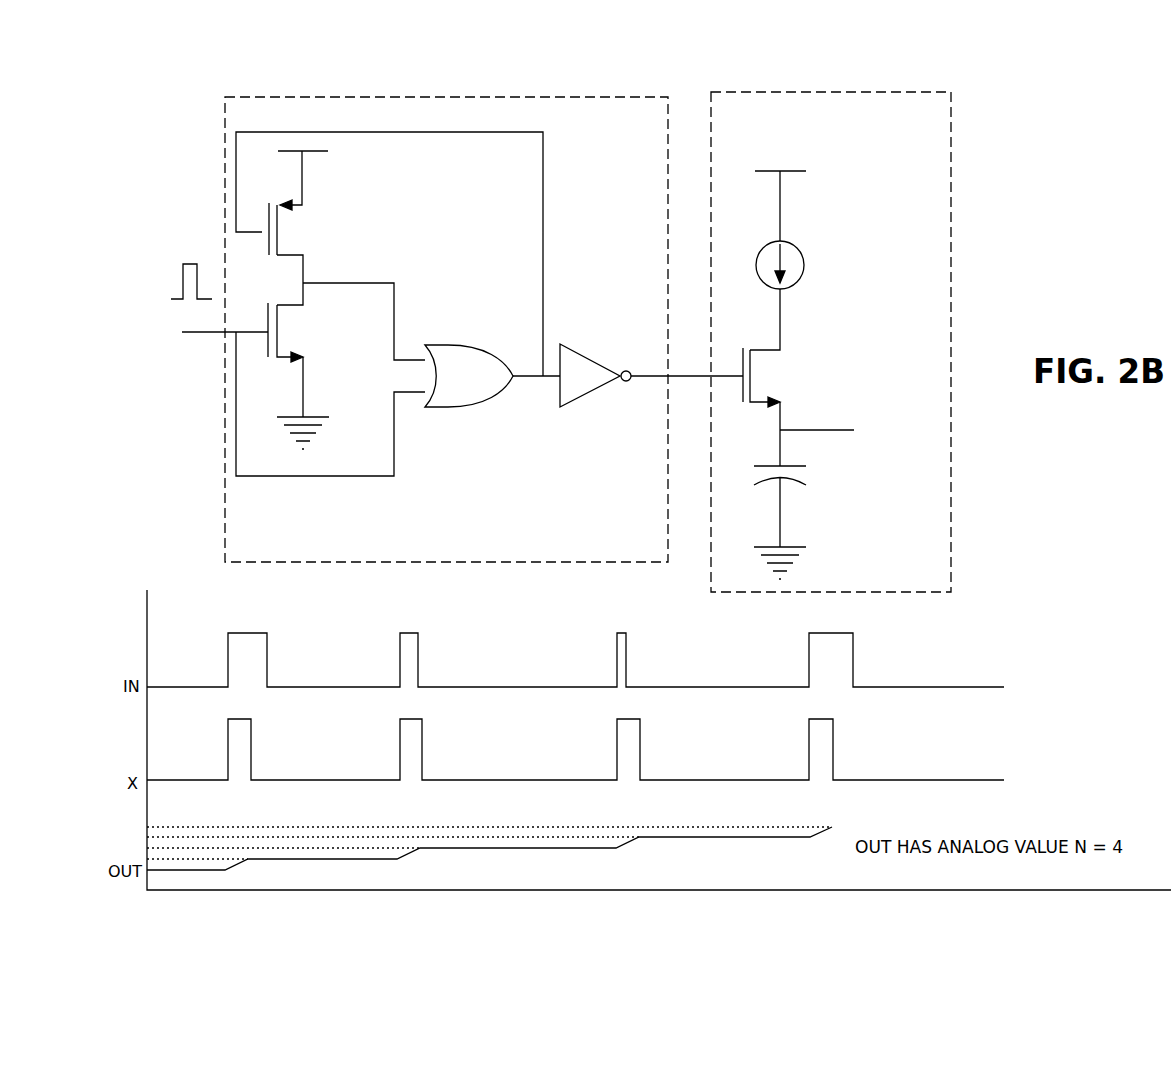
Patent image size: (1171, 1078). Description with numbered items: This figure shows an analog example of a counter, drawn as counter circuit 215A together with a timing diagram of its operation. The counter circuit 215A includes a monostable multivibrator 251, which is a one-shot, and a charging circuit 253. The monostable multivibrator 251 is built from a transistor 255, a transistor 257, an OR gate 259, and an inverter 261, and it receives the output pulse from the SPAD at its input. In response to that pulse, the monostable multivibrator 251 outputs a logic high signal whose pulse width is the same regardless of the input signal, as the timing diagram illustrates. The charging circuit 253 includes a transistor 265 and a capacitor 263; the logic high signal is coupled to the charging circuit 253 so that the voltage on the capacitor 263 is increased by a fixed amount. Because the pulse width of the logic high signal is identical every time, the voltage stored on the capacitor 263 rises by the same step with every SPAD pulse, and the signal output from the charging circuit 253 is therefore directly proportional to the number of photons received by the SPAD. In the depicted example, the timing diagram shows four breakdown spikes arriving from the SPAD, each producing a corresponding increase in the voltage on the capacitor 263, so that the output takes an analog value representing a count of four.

The counter circuit 215A is at (748, 57).
The monostable multivibrator 251 is at (541, 553).
The charging circuit 253 is at (926, 118).
The transistor 255 is at (289, 228).
The transistor 257 is at (290, 328).
The OR gate 259 is at (458, 373).
The inverter 261 is at (580, 376).
The capacitor 263 is at (810, 470).
The transistor 265 is at (763, 372).